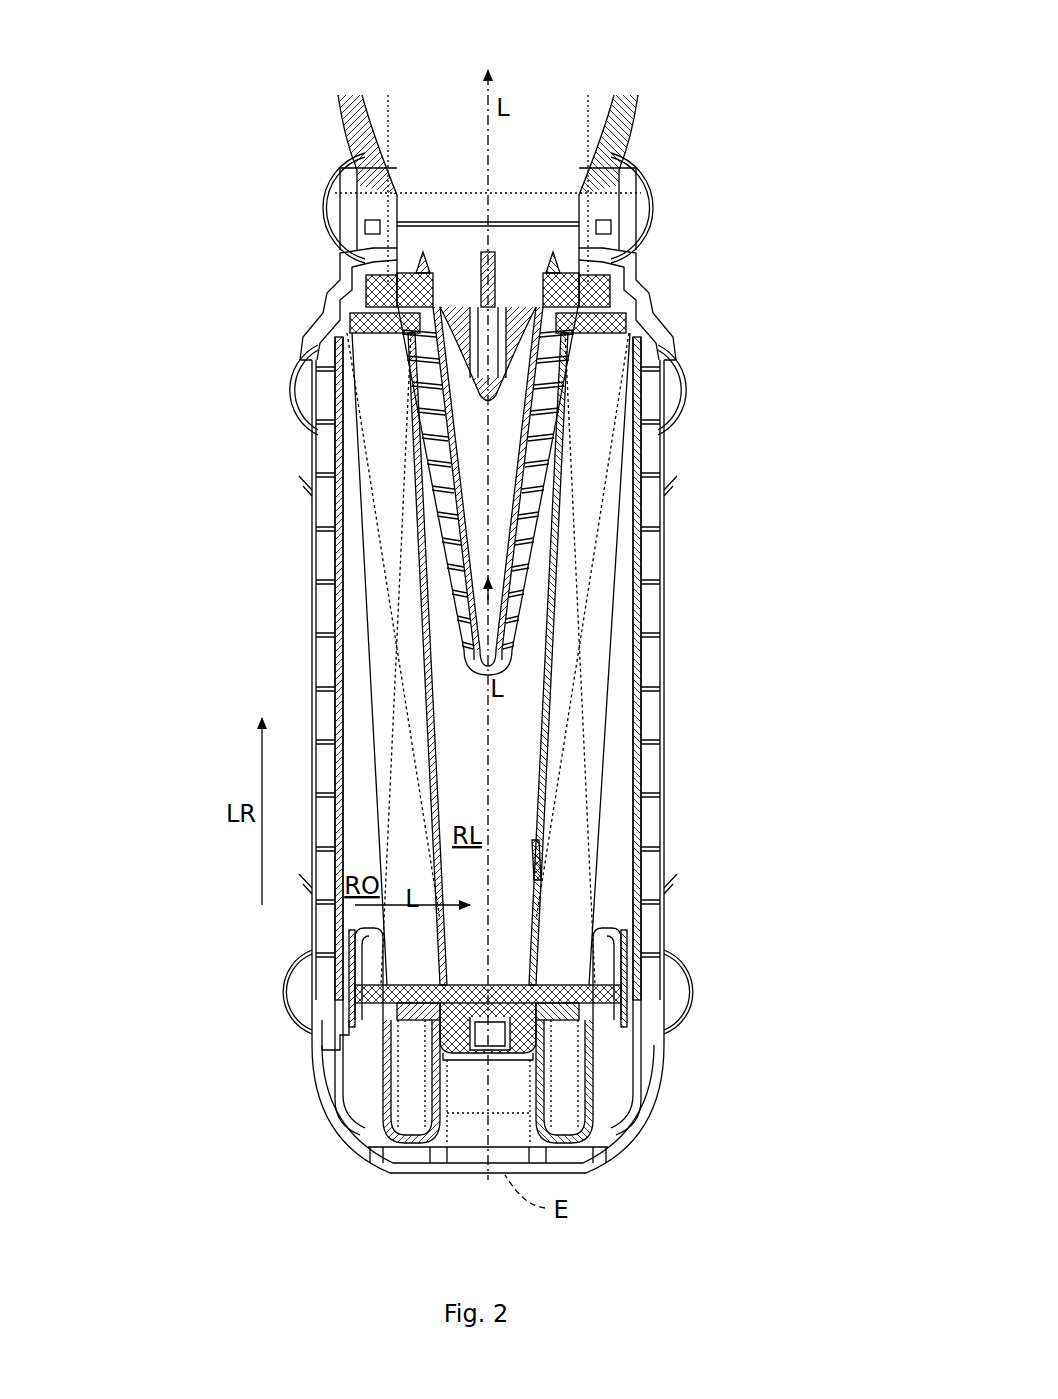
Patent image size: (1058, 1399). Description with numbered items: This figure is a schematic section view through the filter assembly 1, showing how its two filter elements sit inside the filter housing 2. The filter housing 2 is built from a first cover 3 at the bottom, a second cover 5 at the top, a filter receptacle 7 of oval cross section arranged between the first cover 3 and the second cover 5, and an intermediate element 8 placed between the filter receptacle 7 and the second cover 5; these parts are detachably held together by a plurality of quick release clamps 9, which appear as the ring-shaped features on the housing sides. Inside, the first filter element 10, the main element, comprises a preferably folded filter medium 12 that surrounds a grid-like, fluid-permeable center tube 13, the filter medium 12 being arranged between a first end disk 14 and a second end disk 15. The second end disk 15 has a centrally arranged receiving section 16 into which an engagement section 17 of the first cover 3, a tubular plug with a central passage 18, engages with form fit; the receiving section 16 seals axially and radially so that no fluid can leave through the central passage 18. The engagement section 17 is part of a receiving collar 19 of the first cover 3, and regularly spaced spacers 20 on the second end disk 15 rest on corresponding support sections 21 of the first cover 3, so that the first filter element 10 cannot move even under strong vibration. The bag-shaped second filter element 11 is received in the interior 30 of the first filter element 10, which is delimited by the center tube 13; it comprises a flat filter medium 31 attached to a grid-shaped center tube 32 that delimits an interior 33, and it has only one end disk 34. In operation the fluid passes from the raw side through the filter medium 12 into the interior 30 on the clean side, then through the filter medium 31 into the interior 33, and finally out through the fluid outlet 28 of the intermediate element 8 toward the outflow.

The filter assembly 1 is at (430, 68).
The filter housing 2 is at (273, 671).
The first cover 3 is at (662, 1120).
The second cover 5 is at (605, 148).
The filter receptacle 7 is at (645, 555).
The intermediate element 8 is at (648, 274).
The quick release clamps 9 is at (322, 200).
The first filter element 10 is at (612, 713).
The second filter element 11 is at (512, 640).
The filter medium 12 is at (577, 775).
The center tube 13 is at (538, 850).
The first end disk 14 is at (605, 337).
The second end disk 15 is at (600, 1028).
The receiving section 16 is at (497, 1005).
The engagement section 17 is at (447, 1055).
The central passage 18 is at (497, 998).
The receiving collar 19 is at (437, 1047).
The spacers 20 is at (355, 996).
The support sections 21 is at (350, 946).
The fluid outlet 28 is at (457, 252).
The interior 30 is at (464, 776).
The filter medium 31 is at (525, 580).
The center tube 32 is at (520, 520).
The interior 33 is at (488, 391).
The end disk 34 is at (566, 300).